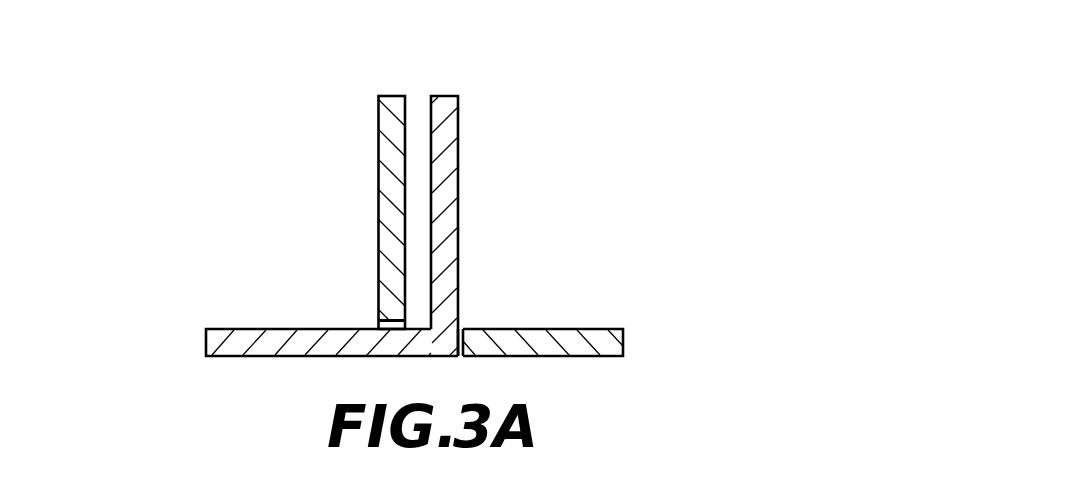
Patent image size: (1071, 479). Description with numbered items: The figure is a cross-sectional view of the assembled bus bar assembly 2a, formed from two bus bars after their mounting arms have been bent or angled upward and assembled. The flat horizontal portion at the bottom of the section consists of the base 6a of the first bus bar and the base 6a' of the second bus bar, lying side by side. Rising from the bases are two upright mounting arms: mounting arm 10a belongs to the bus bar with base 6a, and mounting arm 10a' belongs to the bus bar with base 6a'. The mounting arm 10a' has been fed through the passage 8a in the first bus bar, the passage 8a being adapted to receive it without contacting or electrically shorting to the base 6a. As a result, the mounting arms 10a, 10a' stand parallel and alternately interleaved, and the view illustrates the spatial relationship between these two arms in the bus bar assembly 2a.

The bus bar assembly 2a is at (573, 92).
The mounting arm 10a is at (328, 212).
The mounting arm 10a' is at (514, 226).
The passage 8a is at (462, 329).
The base 6a' is at (274, 341).
The base 6a is at (603, 338).